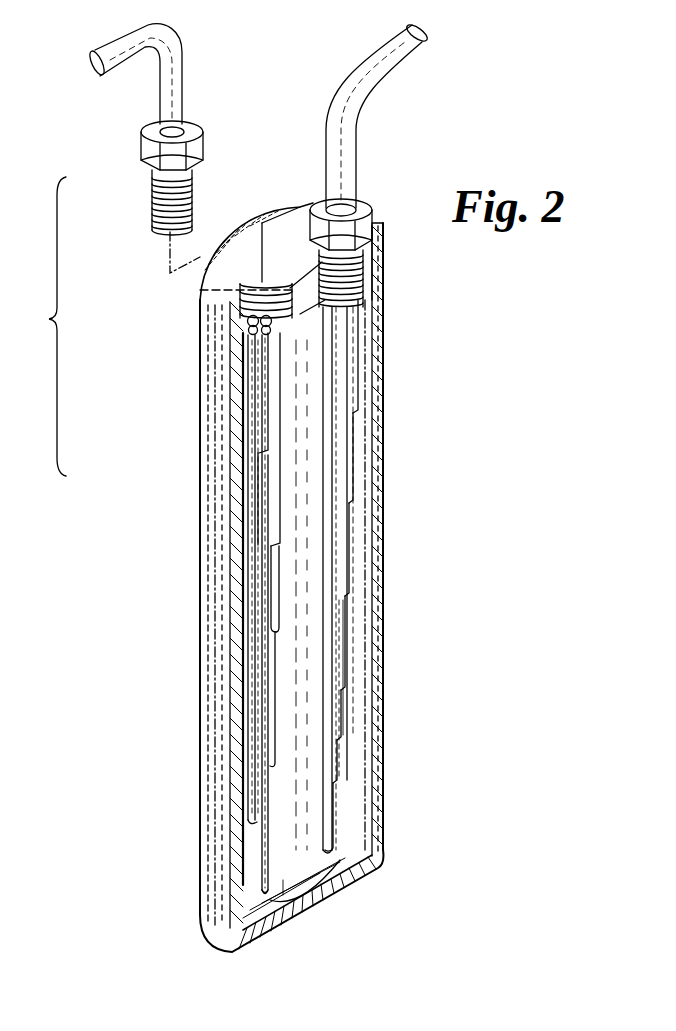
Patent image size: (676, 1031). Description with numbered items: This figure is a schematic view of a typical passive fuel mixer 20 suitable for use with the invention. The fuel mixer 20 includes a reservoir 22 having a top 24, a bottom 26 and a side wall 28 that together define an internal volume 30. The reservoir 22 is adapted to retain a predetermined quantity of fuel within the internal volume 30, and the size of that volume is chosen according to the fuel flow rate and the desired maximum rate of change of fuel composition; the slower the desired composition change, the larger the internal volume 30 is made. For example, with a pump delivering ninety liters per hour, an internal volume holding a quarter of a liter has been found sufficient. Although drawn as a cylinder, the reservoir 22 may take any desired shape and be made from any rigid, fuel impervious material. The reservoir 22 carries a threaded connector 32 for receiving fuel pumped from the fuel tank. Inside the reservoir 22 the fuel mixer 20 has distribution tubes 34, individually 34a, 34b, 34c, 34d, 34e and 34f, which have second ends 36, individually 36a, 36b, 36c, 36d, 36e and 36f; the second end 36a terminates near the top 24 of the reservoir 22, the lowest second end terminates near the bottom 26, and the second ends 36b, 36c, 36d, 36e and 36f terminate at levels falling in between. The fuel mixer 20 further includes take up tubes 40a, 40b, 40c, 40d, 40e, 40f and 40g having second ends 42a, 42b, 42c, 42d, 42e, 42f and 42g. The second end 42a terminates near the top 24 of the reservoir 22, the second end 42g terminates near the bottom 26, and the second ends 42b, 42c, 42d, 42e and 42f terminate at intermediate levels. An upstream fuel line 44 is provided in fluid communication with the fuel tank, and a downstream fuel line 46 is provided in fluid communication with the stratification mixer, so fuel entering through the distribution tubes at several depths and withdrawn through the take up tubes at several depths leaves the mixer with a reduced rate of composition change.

The fuel mixer 20 is at (465, 110).
The reservoir 22 is at (184, 673).
The top 24 is at (204, 262).
The bottom 26 is at (330, 897).
The side wall 28 is at (197, 538).
The internal volume 30 is at (312, 640).
The threaded connector 32 is at (148, 212).
The distribution tubes 34 is at (252, 880).
The distribution tube 34a is at (262, 340).
The distribution tube 34b is at (266, 430).
The distribution tube 34c is at (275, 525).
The distribution tube 34d is at (270, 640).
The distribution tube 34e is at (270, 730).
The distribution tube 34f is at (260, 825).
The second ends 36 is at (280, 897).
The second end 36a is at (258, 385).
The second end 36b is at (272, 465).
The second end 36c is at (278, 578).
The second end 36d is at (268, 690).
The second end 36e is at (262, 780).
The second end 36f is at (250, 880).
The take up tube 40a is at (357, 304).
The take up tube 40b is at (343, 374).
The take up tube 40c is at (347, 467).
The take up tube 40d is at (353, 563).
The take up tube 40e is at (353, 693).
The take up tube 40f is at (343, 767).
The take up tube 40g is at (343, 817).
The second end 42a is at (336, 336).
The second end 42b is at (347, 421).
The second end 42c is at (350, 512).
The second end 42d is at (350, 595).
The second end 42e is at (350, 740).
The second end 42f is at (337, 787).
The second end 42g is at (363, 877).
The upstream fuel line 44 is at (150, 80).
The downstream fuel line 46 is at (400, 55).